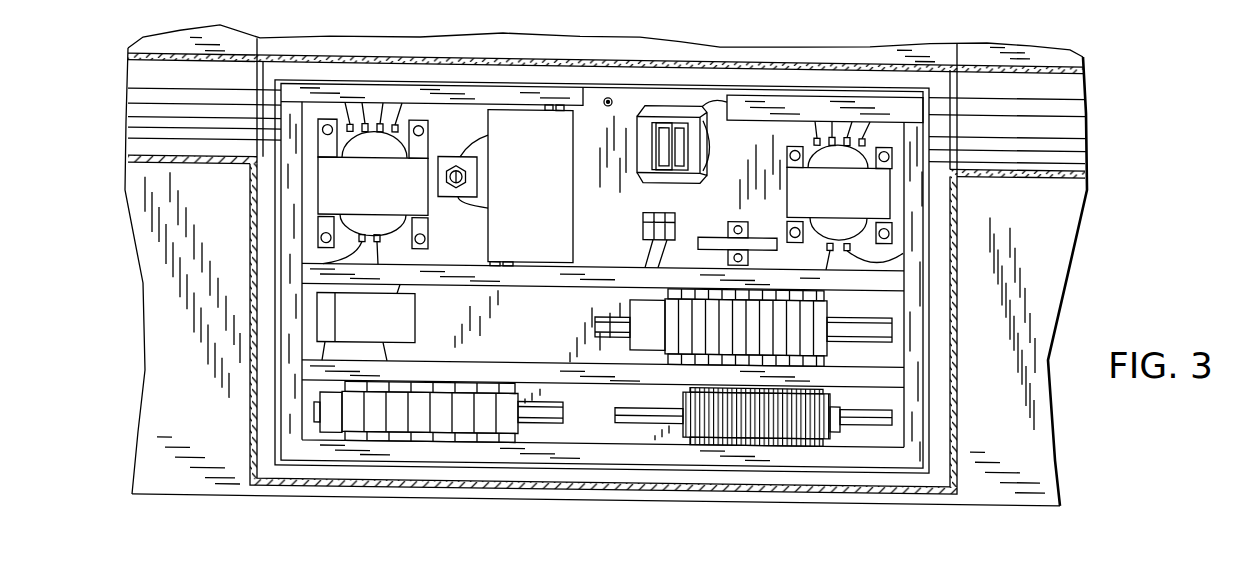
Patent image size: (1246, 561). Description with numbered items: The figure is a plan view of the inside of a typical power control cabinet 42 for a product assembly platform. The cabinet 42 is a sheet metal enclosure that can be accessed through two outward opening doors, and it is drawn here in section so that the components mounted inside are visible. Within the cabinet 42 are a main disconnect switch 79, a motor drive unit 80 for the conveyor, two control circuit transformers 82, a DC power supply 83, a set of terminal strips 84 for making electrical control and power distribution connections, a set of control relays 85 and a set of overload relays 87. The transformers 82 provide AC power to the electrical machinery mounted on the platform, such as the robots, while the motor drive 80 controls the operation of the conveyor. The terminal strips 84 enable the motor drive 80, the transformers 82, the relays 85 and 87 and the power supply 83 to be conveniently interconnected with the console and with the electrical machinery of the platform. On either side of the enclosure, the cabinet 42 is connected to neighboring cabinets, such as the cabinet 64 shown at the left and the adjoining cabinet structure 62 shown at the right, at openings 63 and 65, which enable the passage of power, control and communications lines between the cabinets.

The power control cabinet 42 is at (962, 280).
The right side wall 62 is at (1046, 165).
The opening 63 is at (958, 166).
The cabinet 64 is at (172, 160).
The opening 65 is at (240, 158).
The main disconnect switch 79 is at (677, 175).
The motor drive unit 80 is at (514, 194).
The control circuit transformers 82 is at (359, 194).
The DC power supply 83 is at (363, 325).
The terminal strips 84 is at (836, 428).
The control relays 85 is at (524, 424).
The overload relays 87 is at (836, 298).